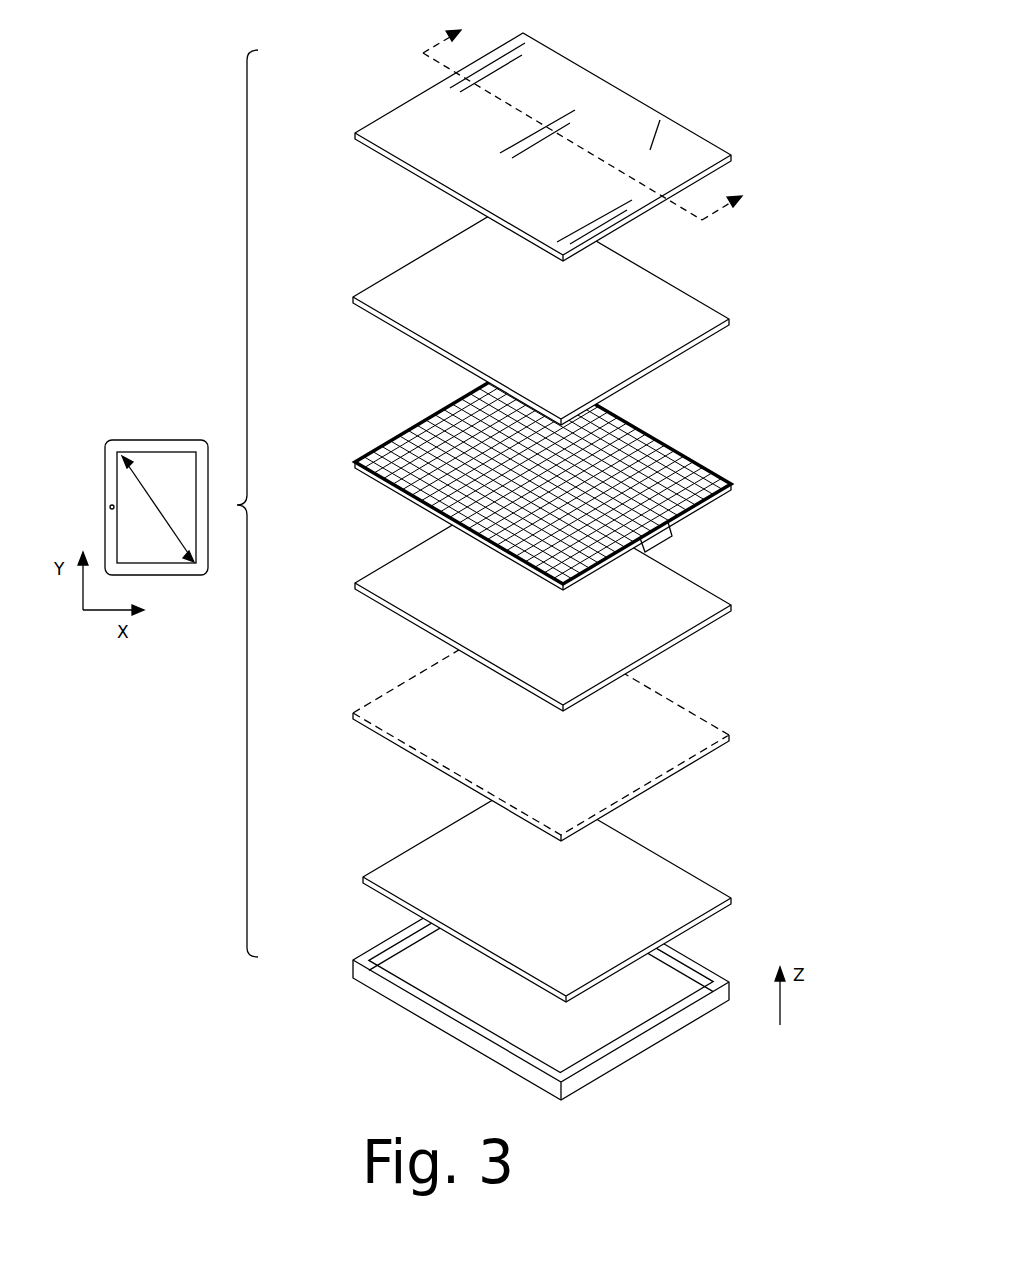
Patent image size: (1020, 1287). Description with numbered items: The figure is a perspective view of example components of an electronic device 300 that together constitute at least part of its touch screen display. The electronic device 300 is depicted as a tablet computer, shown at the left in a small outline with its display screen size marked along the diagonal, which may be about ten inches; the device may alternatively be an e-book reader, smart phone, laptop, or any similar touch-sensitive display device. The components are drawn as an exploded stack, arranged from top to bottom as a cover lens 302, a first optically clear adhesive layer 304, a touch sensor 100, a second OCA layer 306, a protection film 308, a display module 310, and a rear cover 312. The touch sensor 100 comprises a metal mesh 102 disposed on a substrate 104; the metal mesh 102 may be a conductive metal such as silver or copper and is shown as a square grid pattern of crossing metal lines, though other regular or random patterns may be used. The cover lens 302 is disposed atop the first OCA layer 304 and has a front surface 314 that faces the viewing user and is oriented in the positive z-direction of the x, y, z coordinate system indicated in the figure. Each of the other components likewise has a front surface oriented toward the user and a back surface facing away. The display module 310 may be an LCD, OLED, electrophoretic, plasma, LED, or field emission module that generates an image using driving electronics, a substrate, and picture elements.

The electronic device 300 is at (115, 440).
The cover lens 302 is at (353, 131).
The first optically clear adhesive (OCA) layer 304 is at (353, 296).
The touch sensor 100 is at (355, 461).
The metal mesh 102 is at (677, 473).
The substrate 104 is at (733, 487).
The second OCA layer 306 is at (355, 582).
The protection film 308 is at (353, 712).
The display module 310 is at (363, 876).
The rear cover 312 is at (353, 959).
The front surface 314 is at (653, 140).